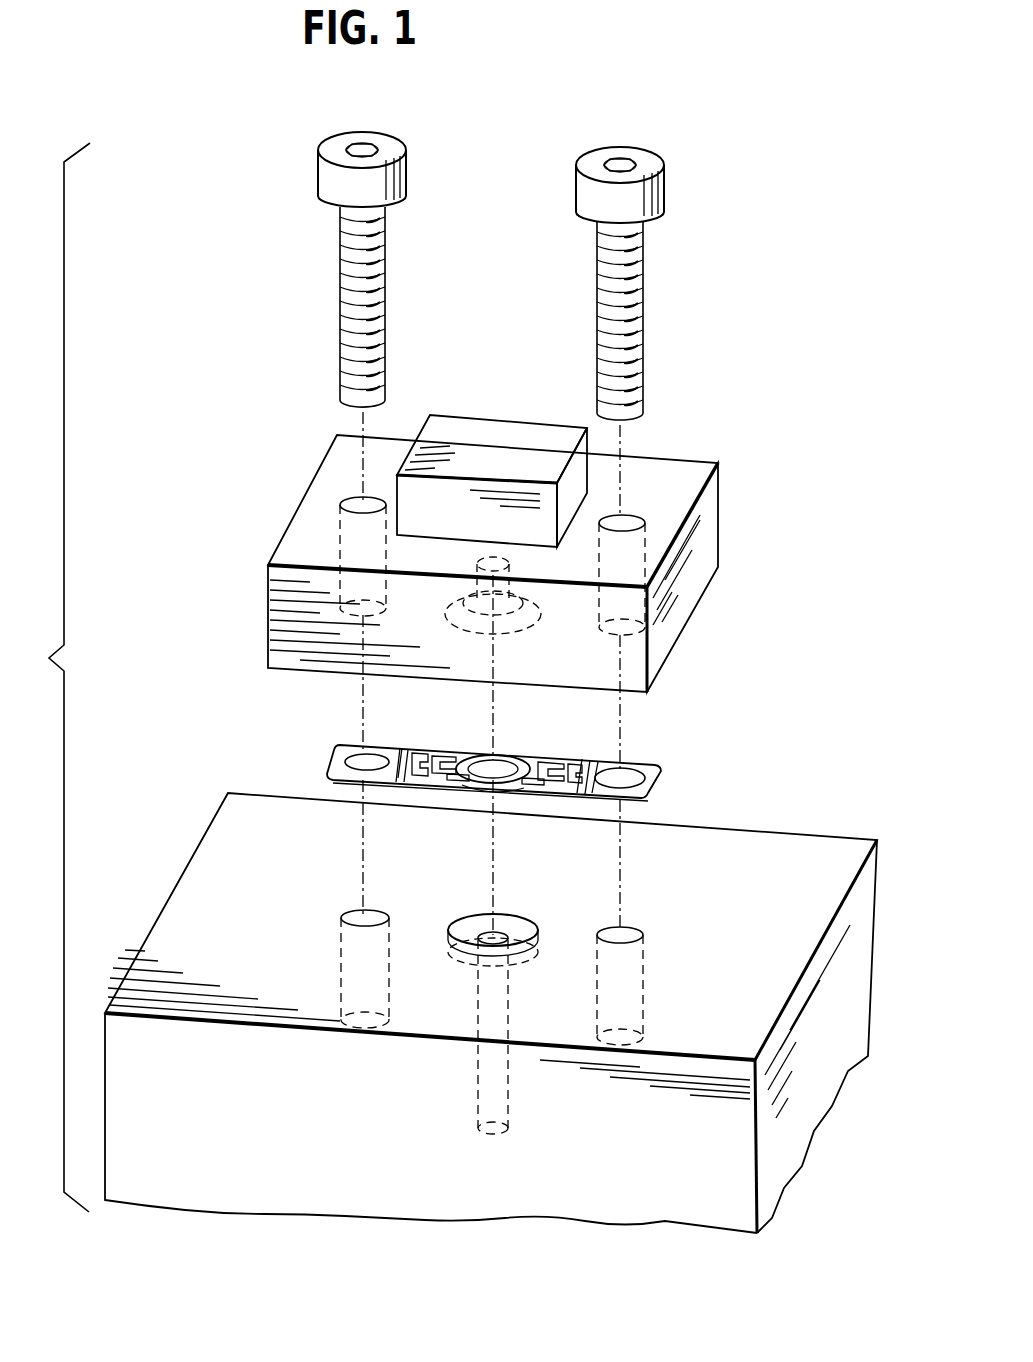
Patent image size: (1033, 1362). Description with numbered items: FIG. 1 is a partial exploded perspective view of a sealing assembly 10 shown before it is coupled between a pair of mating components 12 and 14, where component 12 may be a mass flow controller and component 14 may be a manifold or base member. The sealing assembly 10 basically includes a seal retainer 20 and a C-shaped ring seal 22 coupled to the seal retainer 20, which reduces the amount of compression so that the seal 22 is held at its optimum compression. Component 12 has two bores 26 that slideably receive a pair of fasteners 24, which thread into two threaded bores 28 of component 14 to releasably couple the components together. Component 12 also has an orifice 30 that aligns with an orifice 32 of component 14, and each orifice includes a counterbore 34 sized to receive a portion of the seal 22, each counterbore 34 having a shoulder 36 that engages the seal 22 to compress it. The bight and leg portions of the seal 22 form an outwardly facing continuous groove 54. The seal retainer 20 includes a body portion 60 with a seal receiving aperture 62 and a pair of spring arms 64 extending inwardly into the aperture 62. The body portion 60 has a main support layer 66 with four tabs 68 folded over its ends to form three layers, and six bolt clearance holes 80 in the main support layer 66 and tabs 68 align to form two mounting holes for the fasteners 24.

The sealing assembly 10 is at (283, 731).
The component 12 is at (268, 601).
The component 14 is at (186, 864).
The seal retainer 20 is at (664, 784).
The seal 22 is at (518, 758).
The fasteners 24 is at (578, 185).
The bores 26 is at (352, 503).
The threaded bores 28 is at (345, 920).
The orifice 30 is at (512, 563).
The orifice 32 is at (503, 933).
The counterbore 34 is at (519, 625).
The shoulder 36 is at (458, 625).
The continuous groove 54 is at (480, 792).
The body portion 60 is at (600, 757).
The seal receiving aperture 62 is at (447, 752).
The spring arms 64 is at (450, 790).
The main support layer 66 is at (410, 746).
The tabs 68 is at (340, 770).
The bolt clearance holes 80 is at (355, 753).